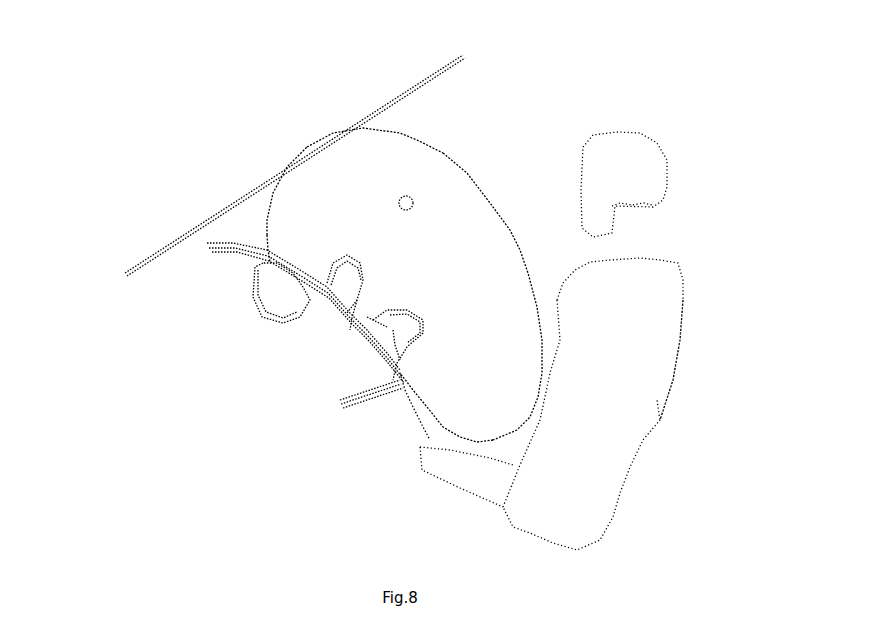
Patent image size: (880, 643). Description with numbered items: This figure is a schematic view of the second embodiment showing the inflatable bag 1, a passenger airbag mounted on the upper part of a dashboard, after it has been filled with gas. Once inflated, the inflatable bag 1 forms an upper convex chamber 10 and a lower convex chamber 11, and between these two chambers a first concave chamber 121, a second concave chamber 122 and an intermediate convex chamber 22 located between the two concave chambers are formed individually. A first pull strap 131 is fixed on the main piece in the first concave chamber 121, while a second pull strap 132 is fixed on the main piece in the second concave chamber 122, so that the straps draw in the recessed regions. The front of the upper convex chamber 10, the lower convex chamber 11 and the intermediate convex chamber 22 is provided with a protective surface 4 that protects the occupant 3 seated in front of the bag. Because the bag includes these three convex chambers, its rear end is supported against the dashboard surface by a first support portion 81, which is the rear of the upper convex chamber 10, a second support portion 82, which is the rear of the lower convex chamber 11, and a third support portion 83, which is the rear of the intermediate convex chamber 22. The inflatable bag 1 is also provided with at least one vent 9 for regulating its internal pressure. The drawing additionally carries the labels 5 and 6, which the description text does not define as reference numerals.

The inflatable bag 1 is at (380, 137).
The occupant 3 is at (588, 383).
The protective surface 4 is at (438, 155).
The reference plane 5 is at (350, 123).
The forehead portion 6 is at (292, 192).
The vent 9 is at (410, 205).
The upper convex chamber 10 is at (277, 235).
The lower convex chamber 11 is at (452, 417).
The intermediate convex chamber 22 is at (363, 317).
The first support portion 81 is at (277, 273).
The second support portion 82 is at (390, 393).
The third support portion 83 is at (397, 305).
The first concave chamber 121 is at (363, 262).
The second concave chamber 122 is at (428, 320).
The first pull strap 131 is at (330, 297).
The second pull strap 132 is at (383, 343).